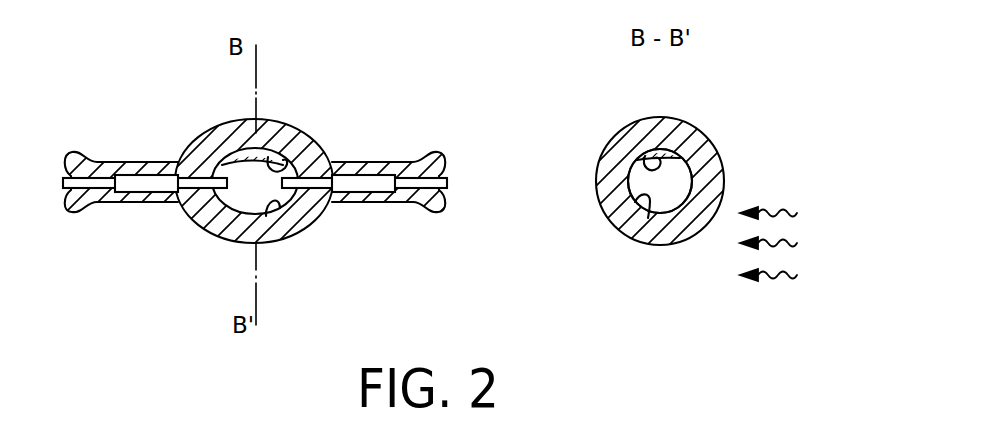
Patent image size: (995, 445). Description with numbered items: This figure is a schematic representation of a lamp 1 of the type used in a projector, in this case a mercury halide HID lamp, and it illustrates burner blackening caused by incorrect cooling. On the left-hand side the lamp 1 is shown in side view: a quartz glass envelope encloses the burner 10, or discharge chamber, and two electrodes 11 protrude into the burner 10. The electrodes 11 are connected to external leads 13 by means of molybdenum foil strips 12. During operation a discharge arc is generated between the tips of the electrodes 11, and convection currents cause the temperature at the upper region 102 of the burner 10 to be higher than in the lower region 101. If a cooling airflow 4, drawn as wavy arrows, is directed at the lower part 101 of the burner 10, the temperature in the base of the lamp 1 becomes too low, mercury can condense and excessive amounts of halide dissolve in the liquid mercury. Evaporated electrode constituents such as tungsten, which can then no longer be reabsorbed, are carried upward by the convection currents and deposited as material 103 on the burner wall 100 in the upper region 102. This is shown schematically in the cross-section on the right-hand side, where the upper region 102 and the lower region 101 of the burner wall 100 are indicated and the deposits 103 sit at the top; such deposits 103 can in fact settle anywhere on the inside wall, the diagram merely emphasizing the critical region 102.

The lamp 1 is at (204, 105).
The burner 10 is at (242, 193).
The electrodes 11 is at (195, 184).
The molybdenum foil strips 12 is at (140, 186).
The external leads 13 is at (87, 183).
The burner wall 100 is at (280, 208).
The lower region 101 is at (659, 181).
The upper region 102 is at (588, 182).
The deposited material 103 is at (284, 158).
The cooling airflow 4 is at (773, 287).